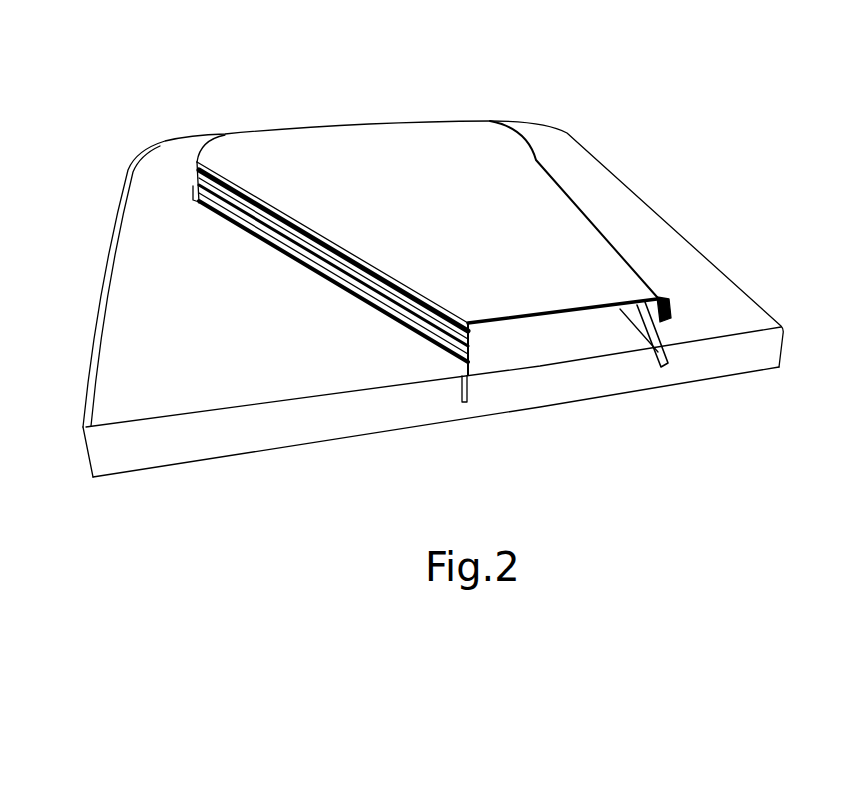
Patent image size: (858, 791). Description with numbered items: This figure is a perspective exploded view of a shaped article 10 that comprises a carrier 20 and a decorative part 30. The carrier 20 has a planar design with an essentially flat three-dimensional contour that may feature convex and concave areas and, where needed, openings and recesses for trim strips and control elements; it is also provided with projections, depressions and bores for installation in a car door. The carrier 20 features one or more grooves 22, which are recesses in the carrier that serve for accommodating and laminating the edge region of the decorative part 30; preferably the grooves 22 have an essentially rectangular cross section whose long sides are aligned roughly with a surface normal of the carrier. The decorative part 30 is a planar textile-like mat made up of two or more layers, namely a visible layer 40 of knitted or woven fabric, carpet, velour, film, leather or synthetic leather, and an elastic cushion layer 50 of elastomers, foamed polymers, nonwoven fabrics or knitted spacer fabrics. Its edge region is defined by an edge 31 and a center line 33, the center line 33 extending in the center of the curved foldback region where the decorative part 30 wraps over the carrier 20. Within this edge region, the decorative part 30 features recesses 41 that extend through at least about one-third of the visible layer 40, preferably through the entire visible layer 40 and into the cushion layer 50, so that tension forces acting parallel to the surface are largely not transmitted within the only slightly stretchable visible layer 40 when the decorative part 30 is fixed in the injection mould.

The shaped article 10 is at (498, 82).
The carrier 20 is at (247, 370).
The grooves 22 is at (463, 400).
The decorative part 30 is at (318, 148).
The edge 31 is at (472, 358).
The center line 33 is at (543, 165).
The visible layer 40 is at (640, 302).
The recesses 41 is at (365, 290).
The cushion layer 50 is at (537, 324).